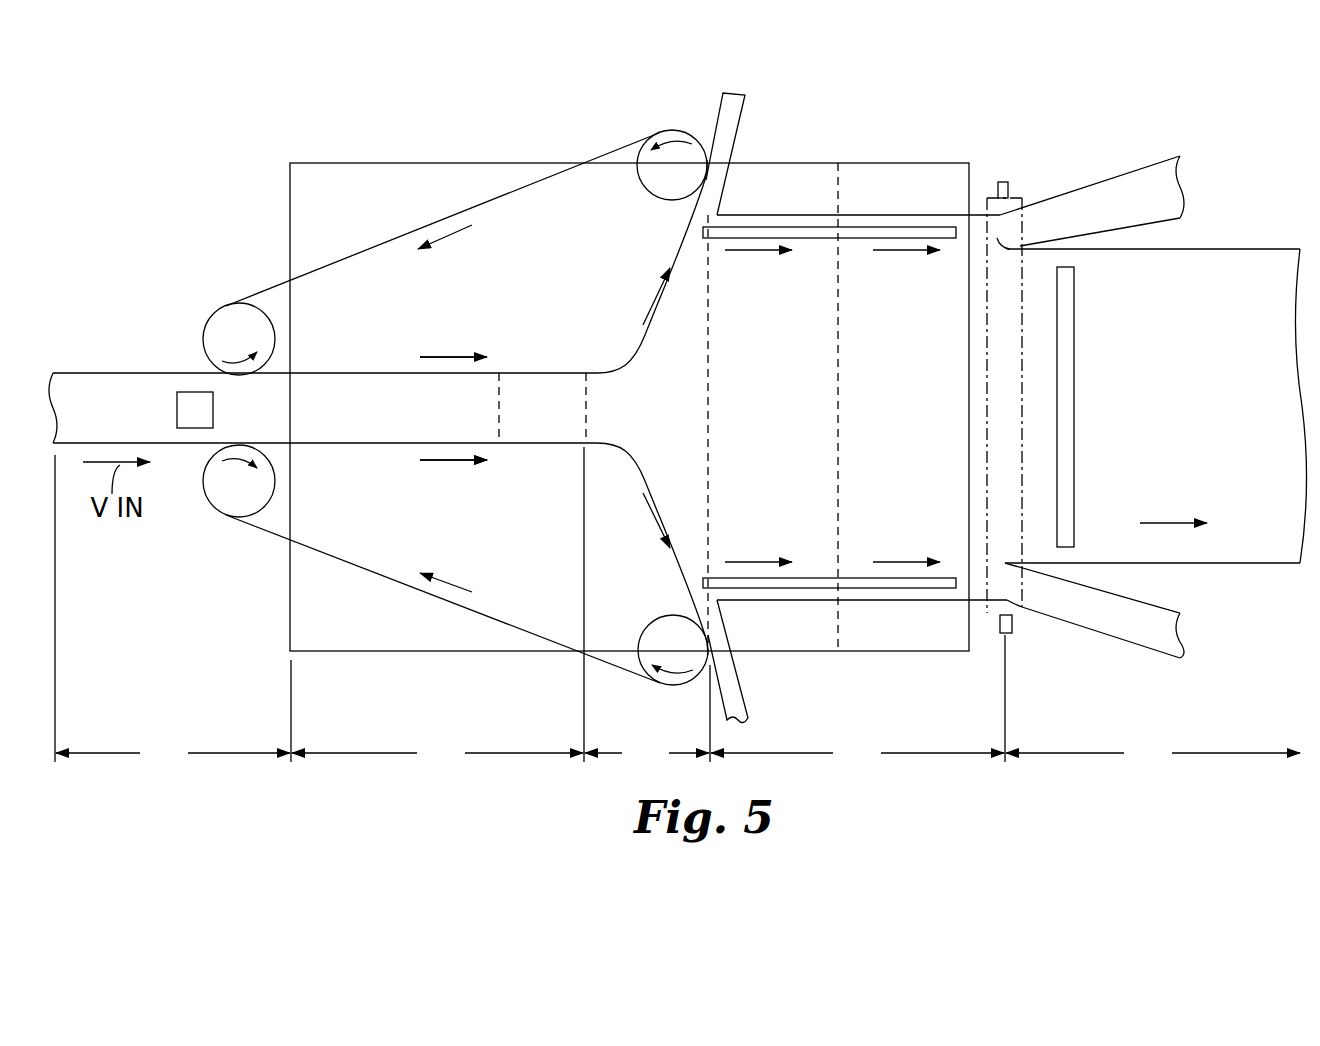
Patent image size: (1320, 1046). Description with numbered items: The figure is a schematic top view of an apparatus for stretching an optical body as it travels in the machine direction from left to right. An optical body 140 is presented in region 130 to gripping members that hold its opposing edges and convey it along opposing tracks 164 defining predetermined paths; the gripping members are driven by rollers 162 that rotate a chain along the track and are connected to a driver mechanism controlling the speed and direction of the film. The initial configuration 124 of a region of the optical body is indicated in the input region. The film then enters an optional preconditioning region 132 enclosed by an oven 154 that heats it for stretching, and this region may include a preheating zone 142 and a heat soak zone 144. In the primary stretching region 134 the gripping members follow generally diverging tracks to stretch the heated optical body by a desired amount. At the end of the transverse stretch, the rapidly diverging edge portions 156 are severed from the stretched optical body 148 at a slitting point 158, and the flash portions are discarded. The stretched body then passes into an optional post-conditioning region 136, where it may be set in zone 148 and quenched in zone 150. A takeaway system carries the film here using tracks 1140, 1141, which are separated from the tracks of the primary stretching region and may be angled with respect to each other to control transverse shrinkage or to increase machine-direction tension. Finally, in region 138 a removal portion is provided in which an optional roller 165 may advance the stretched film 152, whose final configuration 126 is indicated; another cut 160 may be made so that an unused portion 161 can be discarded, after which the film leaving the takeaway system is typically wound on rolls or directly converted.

The initial configuration 124 is at (193, 408).
The final configuration 126 is at (1067, 310).
The region 130 is at (173, 753).
The preconditioning region 132 is at (437, 753).
The primary stretching region 134 is at (647, 753).
The post-conditioning region 136 is at (857, 753).
The region 138 is at (1153, 753).
The optical body 140 is at (95, 421).
The preheating zone 142 is at (387, 421).
The heat soak zone 144 is at (525, 421).
The stretched optical body 148 is at (762, 421).
The zone 150 is at (887, 421).
The stretched film 152 is at (1187, 421).
The oven 154 is at (470, 163).
The rapidly diverging edge portions 156 is at (733, 96).
The slitting point 158 is at (720, 212).
The cut 160 is at (997, 238).
The unused portion 161 is at (1115, 196).
The rollers 162 is at (222, 322).
The opposing tracks 164 is at (630, 360).
The roller 165 is at (1022, 612).
The track 1140 is at (813, 240).
The track 1141 is at (815, 578).